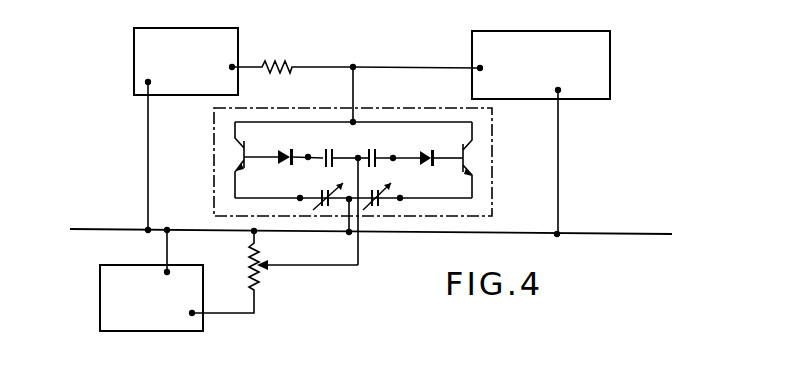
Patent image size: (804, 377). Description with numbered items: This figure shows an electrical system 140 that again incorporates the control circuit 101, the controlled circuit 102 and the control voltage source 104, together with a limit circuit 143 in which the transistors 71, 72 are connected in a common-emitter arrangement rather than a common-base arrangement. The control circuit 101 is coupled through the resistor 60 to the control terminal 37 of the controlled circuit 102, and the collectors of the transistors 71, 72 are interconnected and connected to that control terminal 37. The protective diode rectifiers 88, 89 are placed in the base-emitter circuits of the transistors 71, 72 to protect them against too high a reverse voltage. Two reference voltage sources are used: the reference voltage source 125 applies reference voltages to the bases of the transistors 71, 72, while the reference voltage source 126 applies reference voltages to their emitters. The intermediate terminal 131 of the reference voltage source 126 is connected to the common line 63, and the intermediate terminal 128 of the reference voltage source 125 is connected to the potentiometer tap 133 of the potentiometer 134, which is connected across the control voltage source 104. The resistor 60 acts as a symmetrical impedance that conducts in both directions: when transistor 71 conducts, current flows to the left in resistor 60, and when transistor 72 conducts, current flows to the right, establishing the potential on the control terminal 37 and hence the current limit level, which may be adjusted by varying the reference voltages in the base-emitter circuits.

The control circuit 101 is at (238, 47).
The resistor 60 is at (281, 64).
The electrical system 140 is at (388, 40).
The control terminal 37 is at (477, 66).
The controlled circuit 102 is at (502, 100).
The limit circuit 143 is at (388, 108).
The transistor 71 is at (246, 151).
The protective diode rectifier 88 is at (292, 152).
The reference voltage source 125 is at (337, 153).
The intermediate terminal 128 is at (362, 168).
The protective diode rectifier 89 is at (434, 152).
The transistor 72 is at (466, 144).
The intermediate terminal 131 is at (347, 205).
The reference voltage source 126 is at (363, 176).
The potentiometer tap 133 is at (264, 263).
The potentiometer 134 is at (260, 280).
The control voltage source 104 is at (100, 310).
The common line 63 is at (590, 233).